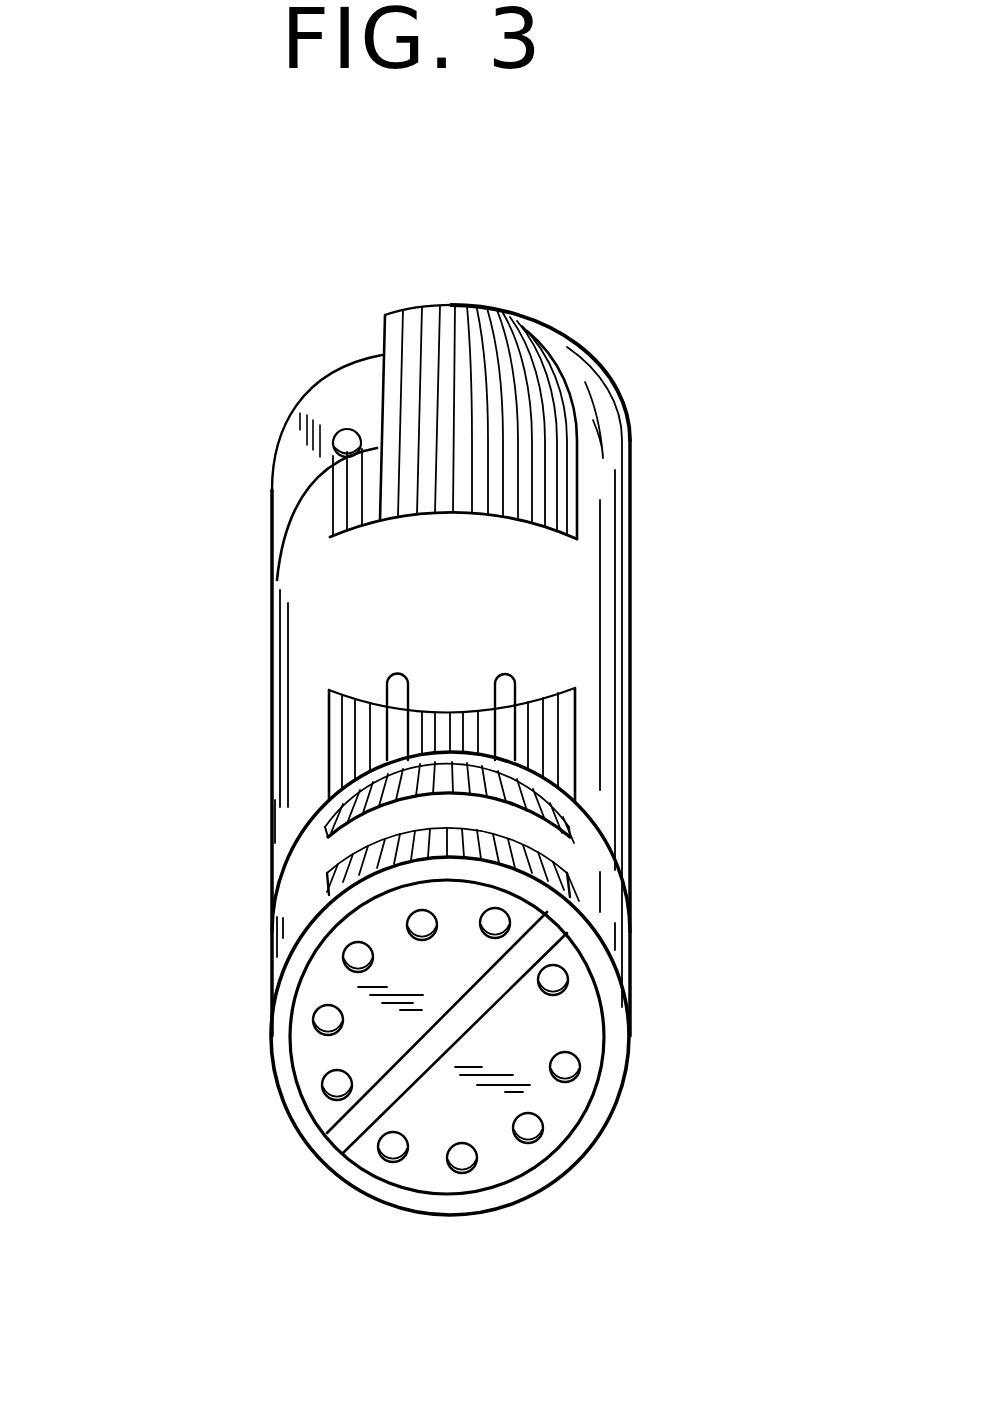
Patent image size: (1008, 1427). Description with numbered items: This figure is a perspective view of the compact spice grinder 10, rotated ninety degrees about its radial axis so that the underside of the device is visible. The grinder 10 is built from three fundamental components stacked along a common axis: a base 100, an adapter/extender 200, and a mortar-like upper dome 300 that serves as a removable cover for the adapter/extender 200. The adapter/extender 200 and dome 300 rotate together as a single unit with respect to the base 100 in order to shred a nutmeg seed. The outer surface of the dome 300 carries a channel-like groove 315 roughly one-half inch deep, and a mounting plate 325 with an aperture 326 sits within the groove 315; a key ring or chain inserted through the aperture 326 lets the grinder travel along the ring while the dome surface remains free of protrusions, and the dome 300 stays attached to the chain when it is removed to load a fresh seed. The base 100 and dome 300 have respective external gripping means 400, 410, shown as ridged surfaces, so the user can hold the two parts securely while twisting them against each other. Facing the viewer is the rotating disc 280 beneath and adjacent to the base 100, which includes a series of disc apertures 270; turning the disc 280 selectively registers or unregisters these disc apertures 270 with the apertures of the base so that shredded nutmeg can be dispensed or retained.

The spice grinder 10 is at (645, 473).
The base 100 is at (615, 940).
The adapter/extender 200 is at (607, 840).
The disc apertures 270 is at (330, 1077).
The rotating disc 280 is at (502, 1000).
The upper dome 300 is at (577, 587).
The groove 315 is at (367, 387).
The mounting plate 325 is at (283, 498).
The aperture 326 is at (338, 428).
The external gripping means 400 is at (330, 883).
The external gripping means 410 is at (573, 340).